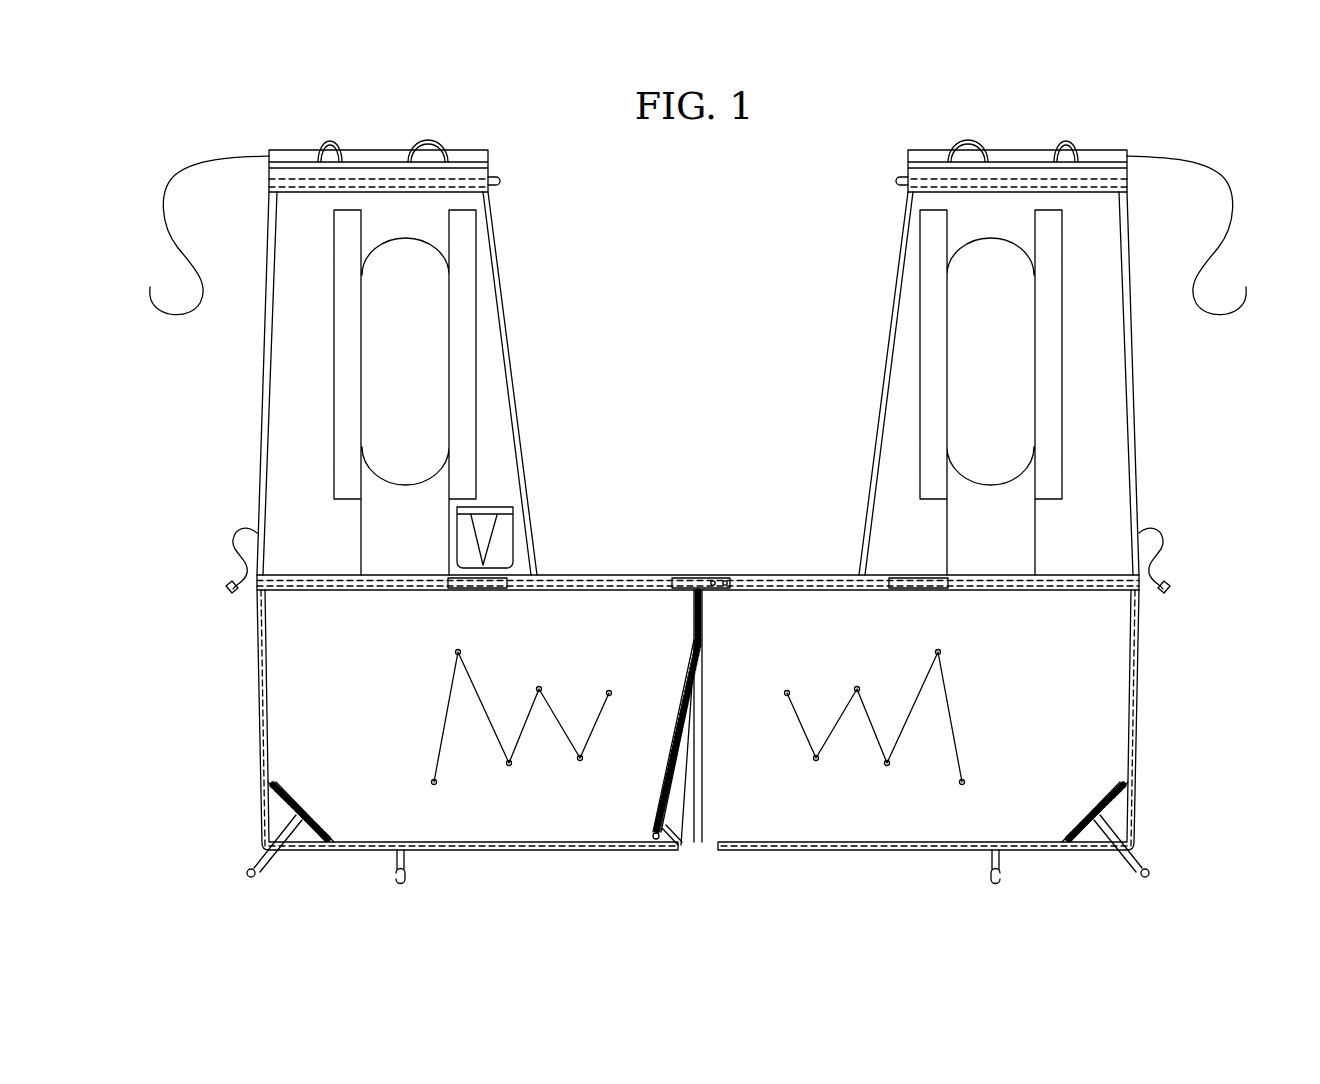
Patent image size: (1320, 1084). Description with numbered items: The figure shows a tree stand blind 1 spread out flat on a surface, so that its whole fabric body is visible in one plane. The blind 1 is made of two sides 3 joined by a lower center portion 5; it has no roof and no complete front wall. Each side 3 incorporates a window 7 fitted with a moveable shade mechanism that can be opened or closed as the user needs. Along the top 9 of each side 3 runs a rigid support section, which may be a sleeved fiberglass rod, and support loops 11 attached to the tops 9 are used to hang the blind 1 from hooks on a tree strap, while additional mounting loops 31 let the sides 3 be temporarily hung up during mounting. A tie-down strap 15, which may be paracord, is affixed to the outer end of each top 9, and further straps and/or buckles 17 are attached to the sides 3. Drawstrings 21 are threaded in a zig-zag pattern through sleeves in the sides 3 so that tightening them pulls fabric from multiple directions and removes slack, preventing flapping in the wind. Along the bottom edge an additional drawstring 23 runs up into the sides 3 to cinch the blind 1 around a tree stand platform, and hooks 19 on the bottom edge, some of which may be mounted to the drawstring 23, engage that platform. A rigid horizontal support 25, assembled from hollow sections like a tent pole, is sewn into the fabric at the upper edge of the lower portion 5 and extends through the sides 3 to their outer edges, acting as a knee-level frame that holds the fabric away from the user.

The tree stand blind 1 is at (208, 416).
The sides 3 is at (285, 281).
The lower center portion 5 is at (633, 622).
The window 7 is at (402, 342).
The top 9 is at (295, 149).
The support loops 11 is at (330, 143).
The mounting loops 31 is at (428, 141).
The tie-down strap 15 is at (168, 226).
The straps and/or buckles 17 is at (227, 548).
The hooks 19 is at (400, 890).
The drawstrings 21 is at (445, 722).
The additional drawstring 23 is at (290, 807).
The rigid horizontal support 25 is at (578, 582).